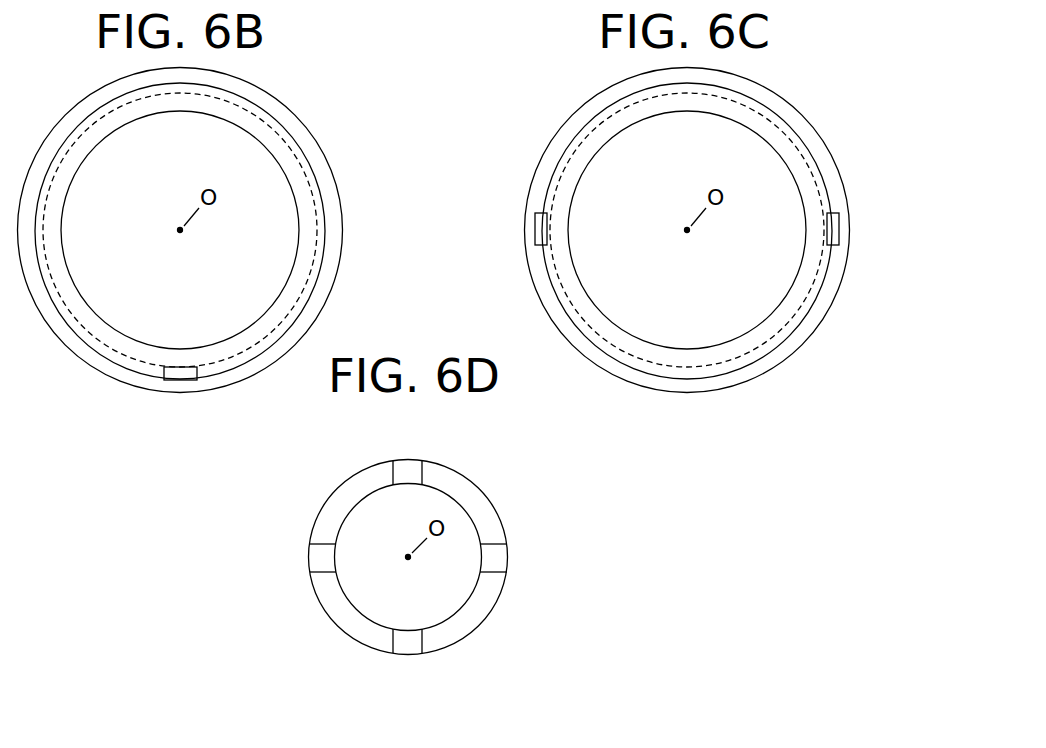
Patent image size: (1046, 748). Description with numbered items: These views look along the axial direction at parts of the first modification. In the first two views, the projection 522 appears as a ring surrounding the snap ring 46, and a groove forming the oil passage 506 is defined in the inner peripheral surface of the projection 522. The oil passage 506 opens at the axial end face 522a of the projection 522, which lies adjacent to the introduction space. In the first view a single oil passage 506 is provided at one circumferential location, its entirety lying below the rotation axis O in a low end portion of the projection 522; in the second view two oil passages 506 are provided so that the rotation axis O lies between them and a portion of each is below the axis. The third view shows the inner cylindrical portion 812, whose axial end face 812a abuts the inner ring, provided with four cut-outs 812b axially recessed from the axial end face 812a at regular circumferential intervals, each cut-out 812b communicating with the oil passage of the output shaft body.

In FIG. 6B, the snap ring 46 is at (92, 310).
In FIG. 6C, the snap ring 46 is at (598, 310).
In FIG. 6B, the projection 522 is at (75, 357).
In FIG. 6C, the projection 522 is at (582, 355).
In FIG. 6B, the axial end face 522a is at (125, 375).
In FIG. 6C, the axial end face 522a is at (633, 375).
In FIG. 6B, the oil passage 506 is at (180, 378).
In FIG. 6C, the oil passage 506 is at (540, 242).
In FIG. 6D, the inner cylindrical portion 812 is at (342, 483).
In FIG. 6D, the axial end face 812a is at (473, 498).
In FIG. 6D, the cut-out 812b is at (407, 467).